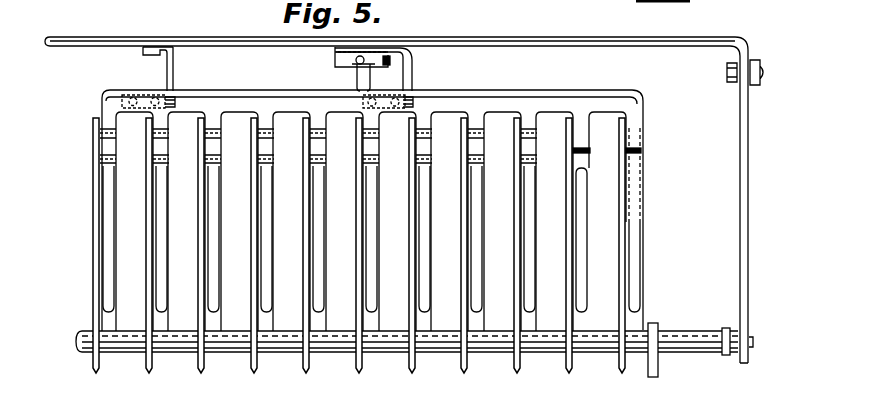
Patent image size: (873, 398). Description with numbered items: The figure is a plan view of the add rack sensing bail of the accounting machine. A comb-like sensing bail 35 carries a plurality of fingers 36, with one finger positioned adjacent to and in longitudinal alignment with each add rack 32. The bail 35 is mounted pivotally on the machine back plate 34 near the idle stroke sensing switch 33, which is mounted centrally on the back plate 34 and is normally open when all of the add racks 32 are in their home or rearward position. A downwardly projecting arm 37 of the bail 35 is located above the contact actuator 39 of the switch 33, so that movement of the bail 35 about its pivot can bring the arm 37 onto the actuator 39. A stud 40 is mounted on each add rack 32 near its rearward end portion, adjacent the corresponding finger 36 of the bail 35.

The add rack 32 is at (514, 360).
The idle stroke sensing switch 33 is at (394, 62).
The machine back plate 34 is at (604, 46).
The sensing bail 35 is at (542, 88).
The fingers 36 is at (588, 313).
The downwardly projecting arm 37 is at (366, 78).
The contact actuator 39 is at (355, 78).
The stud 40 is at (592, 160).